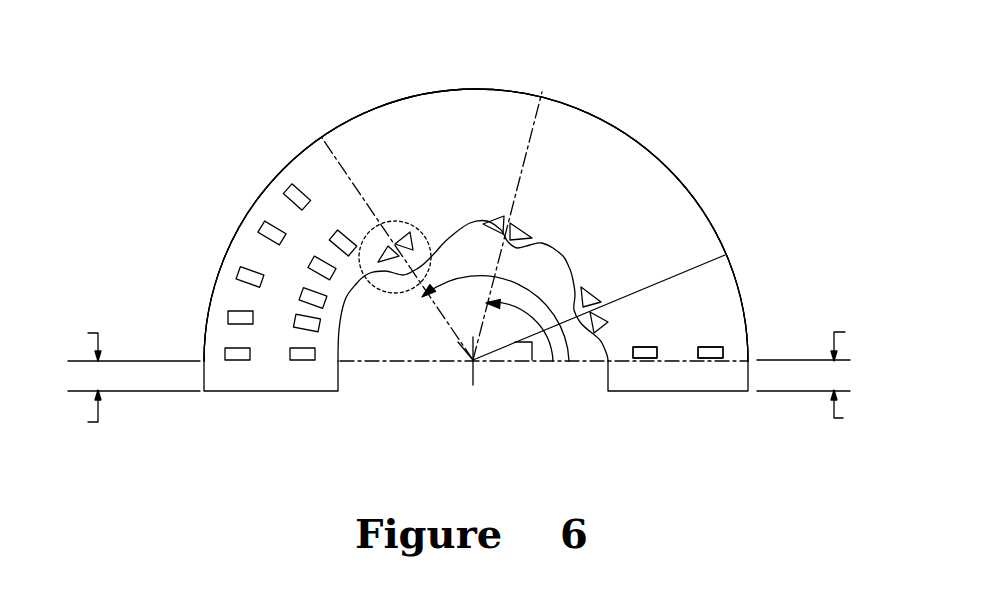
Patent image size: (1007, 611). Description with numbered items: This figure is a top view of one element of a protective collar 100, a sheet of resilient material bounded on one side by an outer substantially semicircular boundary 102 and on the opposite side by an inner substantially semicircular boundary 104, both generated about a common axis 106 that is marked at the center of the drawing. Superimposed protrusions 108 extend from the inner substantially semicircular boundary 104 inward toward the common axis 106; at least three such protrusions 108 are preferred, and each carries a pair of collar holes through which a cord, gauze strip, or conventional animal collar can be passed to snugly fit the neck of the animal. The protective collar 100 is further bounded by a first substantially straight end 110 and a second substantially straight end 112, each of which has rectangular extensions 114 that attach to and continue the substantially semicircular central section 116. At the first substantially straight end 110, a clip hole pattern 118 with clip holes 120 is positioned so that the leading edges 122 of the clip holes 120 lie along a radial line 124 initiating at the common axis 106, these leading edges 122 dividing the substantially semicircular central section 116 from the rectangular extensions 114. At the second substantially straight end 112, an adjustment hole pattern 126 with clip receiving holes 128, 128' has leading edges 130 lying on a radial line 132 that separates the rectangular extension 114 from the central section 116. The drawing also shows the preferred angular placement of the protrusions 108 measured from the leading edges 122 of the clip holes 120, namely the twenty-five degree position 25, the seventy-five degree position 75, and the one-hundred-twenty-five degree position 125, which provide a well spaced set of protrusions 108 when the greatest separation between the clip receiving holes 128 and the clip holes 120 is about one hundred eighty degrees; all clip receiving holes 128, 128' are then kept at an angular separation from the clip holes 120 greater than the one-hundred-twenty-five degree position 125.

The protective collar 100 is at (750, 157).
The outer substantially semicircular boundary 102 is at (584, 100).
The inner substantially semicircular boundary 104 is at (567, 257).
The common axis 106 is at (427, 292).
The protrusions 108 is at (420, 241).
The first substantially straight end 110 is at (677, 392).
The second substantially straight end 112 is at (302, 393).
The rectangular extensions 114 is at (466, 371).
The substantially semicircular central section 116 is at (430, 115).
The clip hole pattern 118 is at (738, 352).
The clip holes 120 is at (653, 347).
The leading edges of the clip holes 122 is at (713, 360).
The radial line 124 is at (552, 358).
The 125 degree angle 125 is at (478, 277).
The adjustment hole pattern 126 is at (212, 357).
The clip receiving holes 128 is at (233, 267).
The clip receiving holes 128' is at (164, 303).
The leading edges of the clip receiving holes 130 is at (303, 362).
The radial line 132 is at (372, 362).
The 75 degree angle 75 is at (527, 314).
The 25 degree angle 25 is at (517, 363).